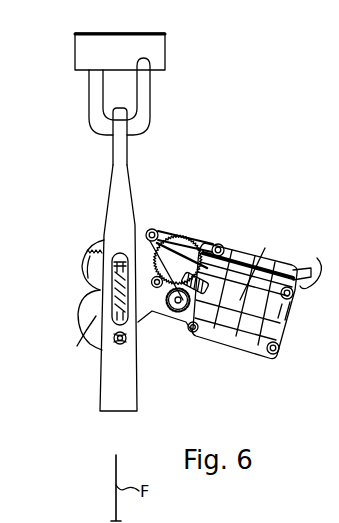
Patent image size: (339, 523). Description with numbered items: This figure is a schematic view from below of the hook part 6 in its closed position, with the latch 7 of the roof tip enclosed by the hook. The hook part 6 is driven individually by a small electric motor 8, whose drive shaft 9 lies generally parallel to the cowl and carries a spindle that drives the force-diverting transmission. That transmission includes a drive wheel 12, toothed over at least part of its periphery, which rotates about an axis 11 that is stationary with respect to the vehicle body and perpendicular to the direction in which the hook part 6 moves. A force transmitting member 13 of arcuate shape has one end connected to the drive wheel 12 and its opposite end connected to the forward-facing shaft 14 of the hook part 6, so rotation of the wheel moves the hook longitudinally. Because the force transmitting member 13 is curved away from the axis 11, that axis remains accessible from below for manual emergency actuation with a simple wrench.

The hook part 6 is at (128, 150).
The latch 7 is at (95, 128).
The electric motor 8 is at (253, 310).
The drive shaft 9 is at (200, 240).
The axis 11 is at (120, 253).
The drive wheel 12 is at (92, 252).
The force transmitting member 13 is at (86, 330).
The shaft 14 is at (123, 383).